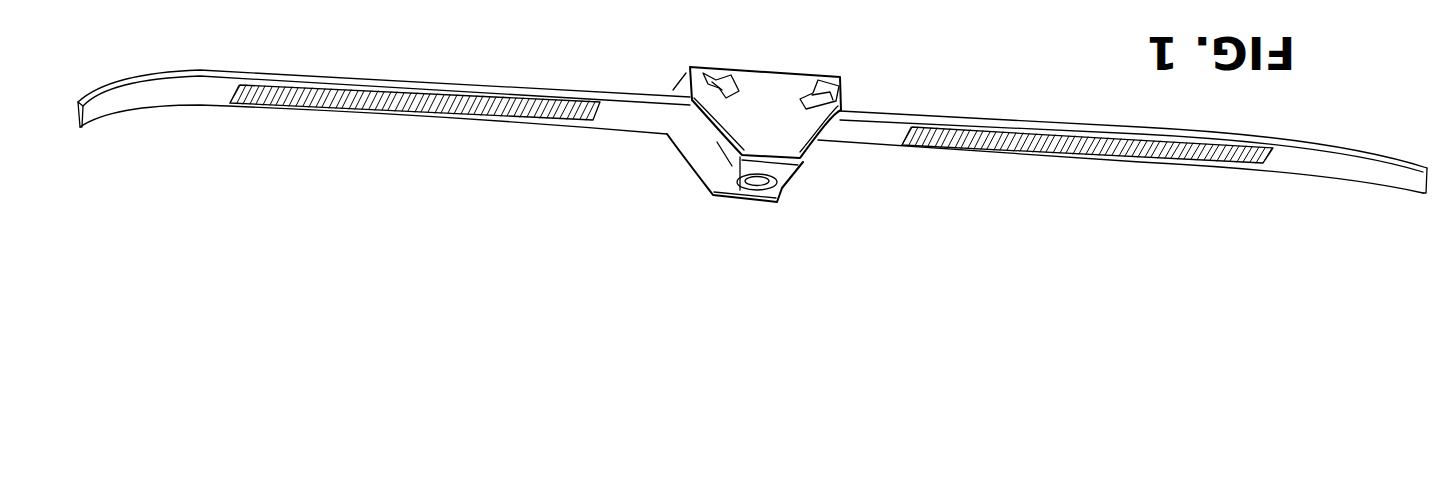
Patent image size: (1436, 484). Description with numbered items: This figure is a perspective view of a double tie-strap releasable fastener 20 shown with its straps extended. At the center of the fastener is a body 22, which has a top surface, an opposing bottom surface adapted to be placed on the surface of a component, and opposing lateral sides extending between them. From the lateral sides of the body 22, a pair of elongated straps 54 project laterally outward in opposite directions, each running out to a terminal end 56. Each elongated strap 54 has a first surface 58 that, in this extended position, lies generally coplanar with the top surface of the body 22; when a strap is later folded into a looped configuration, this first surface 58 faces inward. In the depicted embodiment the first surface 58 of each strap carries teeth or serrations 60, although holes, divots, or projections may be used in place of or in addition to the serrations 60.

The releasable fastener 20 is at (552, 279).
The body 22 is at (731, 203).
The elongated strap 54 is at (633, 90).
The terminal end 56 is at (79, 115).
The first surface 58 is at (213, 93).
The serrations 60 is at (418, 109).